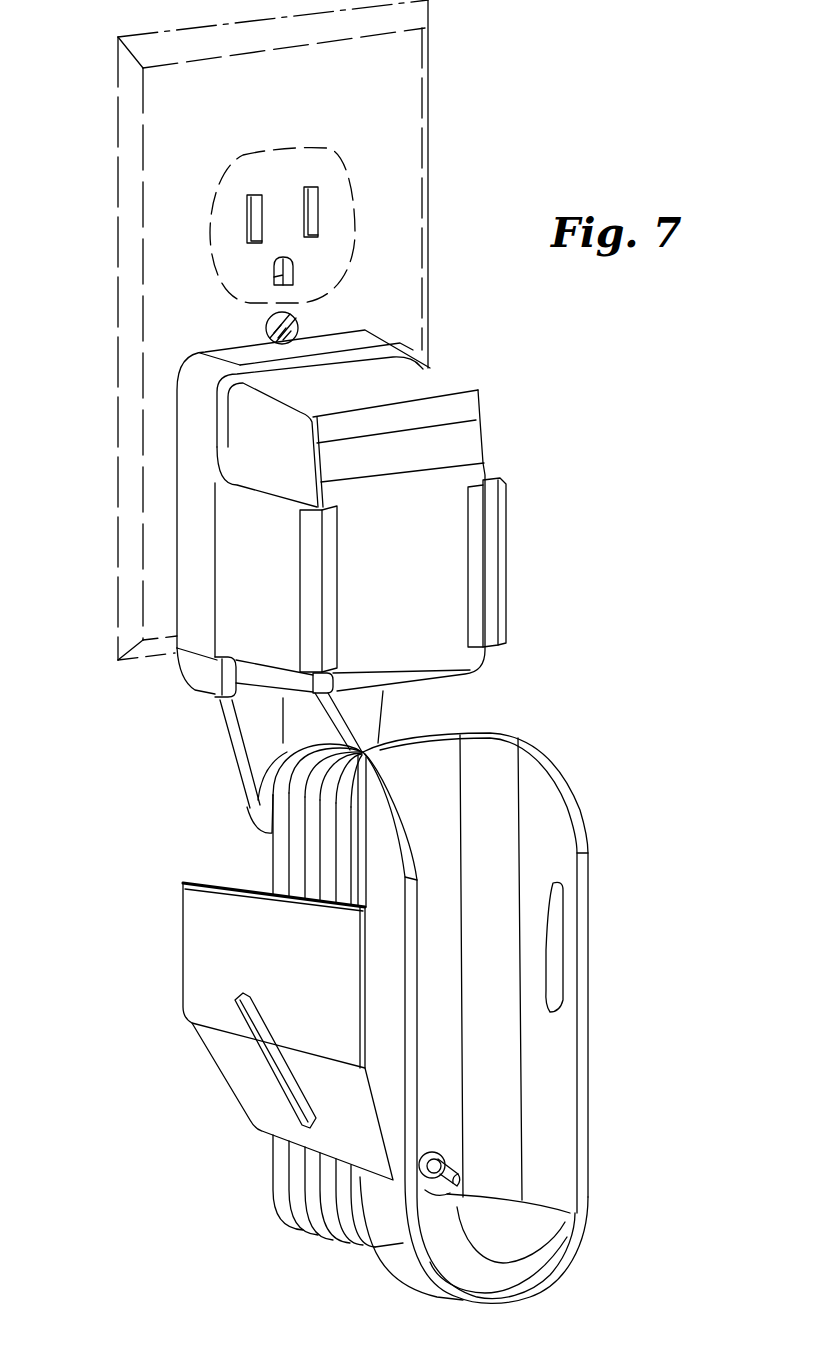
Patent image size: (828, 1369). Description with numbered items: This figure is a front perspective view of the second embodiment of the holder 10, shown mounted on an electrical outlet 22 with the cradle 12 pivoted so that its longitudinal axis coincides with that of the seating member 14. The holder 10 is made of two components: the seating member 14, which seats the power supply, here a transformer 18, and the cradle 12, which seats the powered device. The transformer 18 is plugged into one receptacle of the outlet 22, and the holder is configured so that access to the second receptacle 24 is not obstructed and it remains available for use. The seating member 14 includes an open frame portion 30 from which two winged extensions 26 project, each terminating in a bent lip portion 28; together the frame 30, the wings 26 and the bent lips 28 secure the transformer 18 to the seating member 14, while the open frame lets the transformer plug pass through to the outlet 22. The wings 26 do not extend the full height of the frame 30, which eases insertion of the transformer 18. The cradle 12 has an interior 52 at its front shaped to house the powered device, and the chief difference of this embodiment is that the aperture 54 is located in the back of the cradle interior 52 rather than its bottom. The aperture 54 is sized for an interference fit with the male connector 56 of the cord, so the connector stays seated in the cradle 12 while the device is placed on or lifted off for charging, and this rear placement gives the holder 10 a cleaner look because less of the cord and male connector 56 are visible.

The holder 10 is at (586, 660).
The cradle 12 is at (618, 862).
The seating member 14 is at (531, 518).
The transformer 18 is at (402, 604).
The electrical outlet 22 is at (385, 283).
The second receptacle 24 is at (327, 178).
The winged extensions 26 is at (257, 596).
The bent lip portion 28 is at (330, 627).
The frame portion 30 is at (190, 553).
The cradle interior 52 is at (495, 1053).
The aperture 54 is at (447, 1152).
The male connector 56 is at (453, 1163).